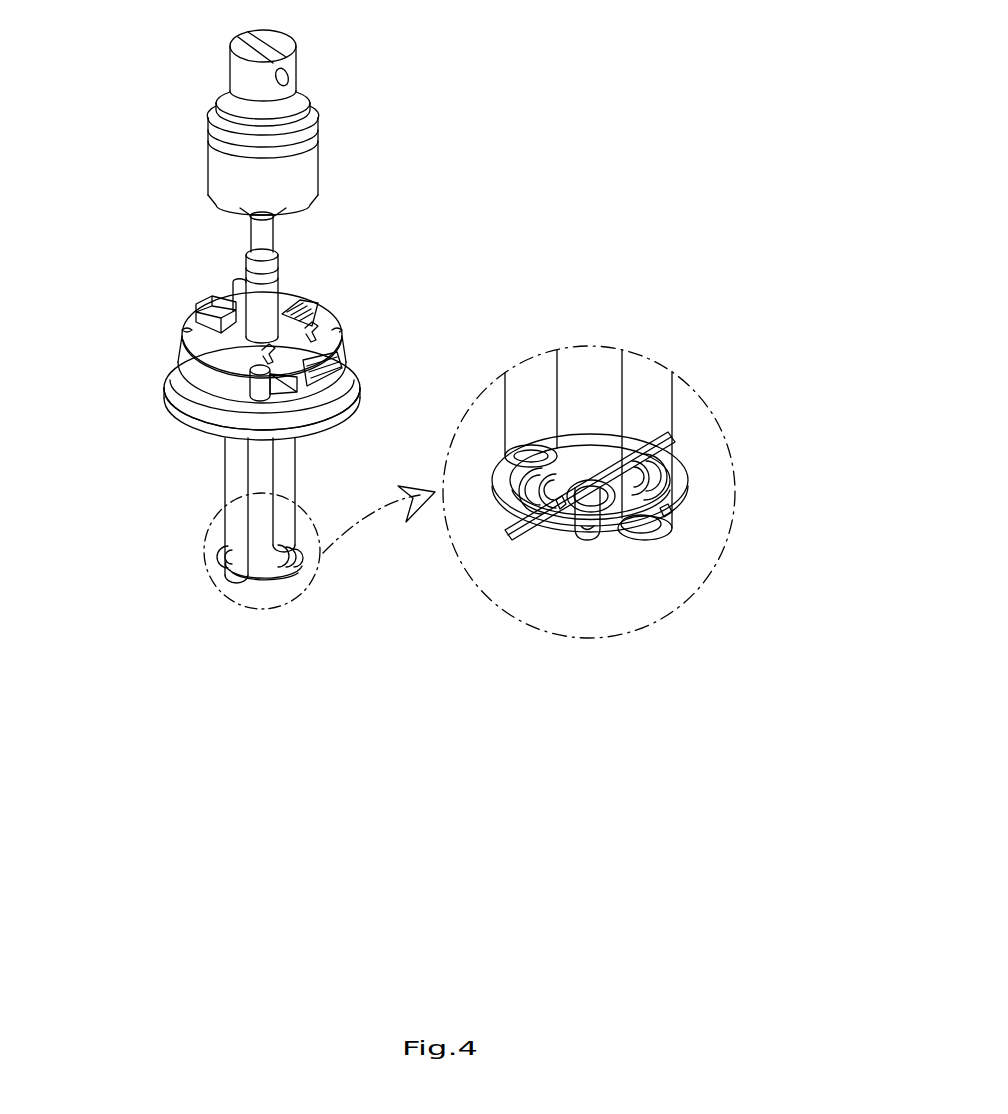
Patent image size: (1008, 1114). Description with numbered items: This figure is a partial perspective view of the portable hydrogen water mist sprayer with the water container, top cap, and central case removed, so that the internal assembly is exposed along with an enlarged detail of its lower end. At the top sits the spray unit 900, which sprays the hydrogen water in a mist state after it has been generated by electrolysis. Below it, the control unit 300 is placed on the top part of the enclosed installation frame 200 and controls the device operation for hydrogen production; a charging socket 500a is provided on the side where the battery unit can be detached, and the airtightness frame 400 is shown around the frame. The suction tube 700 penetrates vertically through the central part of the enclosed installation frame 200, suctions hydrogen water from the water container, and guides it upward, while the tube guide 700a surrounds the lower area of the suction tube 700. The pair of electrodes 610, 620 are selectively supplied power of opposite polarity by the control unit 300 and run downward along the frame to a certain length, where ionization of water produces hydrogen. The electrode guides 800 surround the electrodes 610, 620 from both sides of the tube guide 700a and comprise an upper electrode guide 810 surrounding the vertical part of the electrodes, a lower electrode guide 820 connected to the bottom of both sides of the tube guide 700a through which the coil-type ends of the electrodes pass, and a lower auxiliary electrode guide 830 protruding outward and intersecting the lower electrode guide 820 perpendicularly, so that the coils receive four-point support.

The spray unit 900 is at (318, 77).
The control unit 300 is at (328, 298).
The enclosed installation frame 200 is at (180, 340).
The charging socket 500a is at (350, 367).
The airtightness frame 400 is at (195, 423).
The tube guide 700a is at (153, 543).
The suction tube 700 is at (593, 540).
The electrode 610 is at (212, 558).
The electrode 620 is at (310, 560).
The electrode guides 800 is at (450, 518).
The upper electrode guide 810 is at (262, 463).
The lower electrode guide 820 is at (673, 508).
The lower auxiliary electrode guide 830 is at (660, 433).